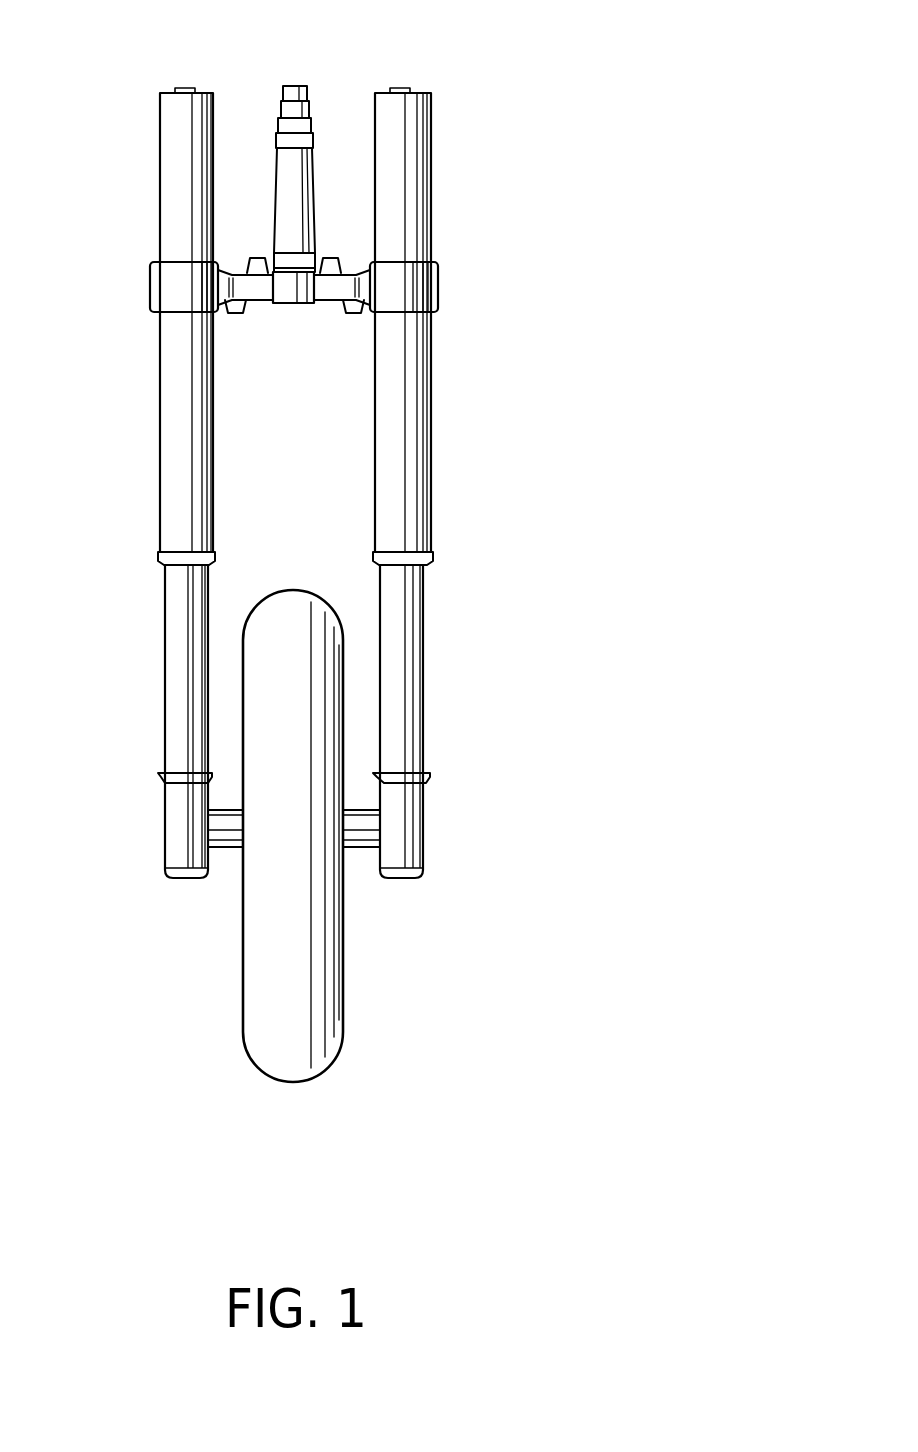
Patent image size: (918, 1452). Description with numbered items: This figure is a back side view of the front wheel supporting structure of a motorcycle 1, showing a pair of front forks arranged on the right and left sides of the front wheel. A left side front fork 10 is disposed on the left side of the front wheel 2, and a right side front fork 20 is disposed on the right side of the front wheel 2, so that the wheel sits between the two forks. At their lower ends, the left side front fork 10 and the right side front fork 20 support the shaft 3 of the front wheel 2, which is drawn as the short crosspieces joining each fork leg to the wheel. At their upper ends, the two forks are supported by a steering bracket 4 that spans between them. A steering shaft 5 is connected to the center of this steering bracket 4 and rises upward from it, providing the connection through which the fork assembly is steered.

The motorcycle 1 is at (498, 70).
The left side front fork 10 is at (128, 245).
The right side front fork 20 is at (445, 245).
The steering bracket 4 is at (415, 288).
The steering shaft 5 is at (303, 190).
The front wheel 2 is at (317, 1000).
The shaft 3 is at (228, 828).